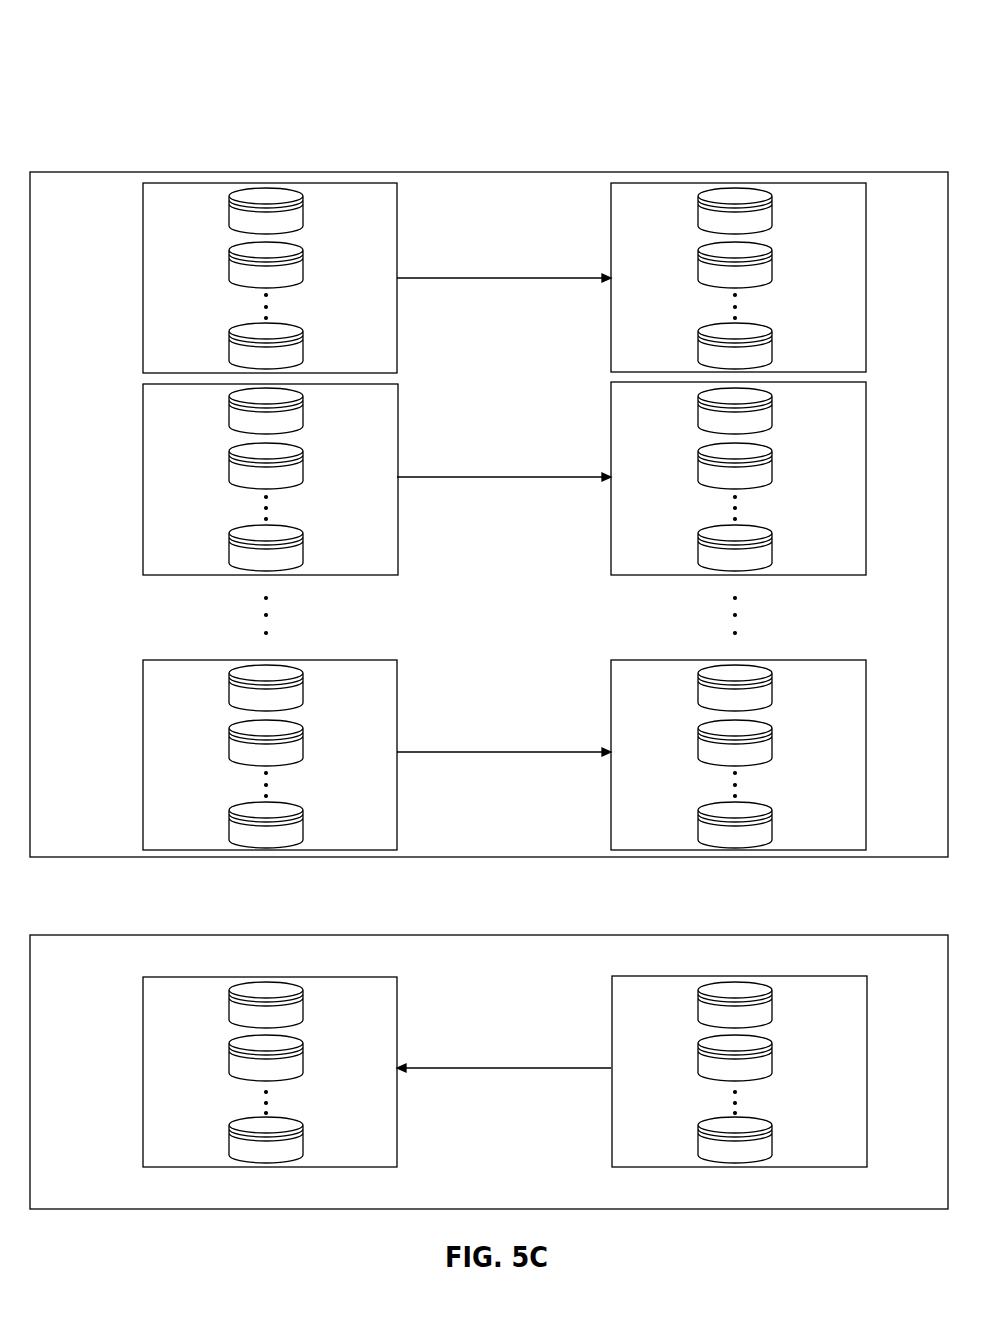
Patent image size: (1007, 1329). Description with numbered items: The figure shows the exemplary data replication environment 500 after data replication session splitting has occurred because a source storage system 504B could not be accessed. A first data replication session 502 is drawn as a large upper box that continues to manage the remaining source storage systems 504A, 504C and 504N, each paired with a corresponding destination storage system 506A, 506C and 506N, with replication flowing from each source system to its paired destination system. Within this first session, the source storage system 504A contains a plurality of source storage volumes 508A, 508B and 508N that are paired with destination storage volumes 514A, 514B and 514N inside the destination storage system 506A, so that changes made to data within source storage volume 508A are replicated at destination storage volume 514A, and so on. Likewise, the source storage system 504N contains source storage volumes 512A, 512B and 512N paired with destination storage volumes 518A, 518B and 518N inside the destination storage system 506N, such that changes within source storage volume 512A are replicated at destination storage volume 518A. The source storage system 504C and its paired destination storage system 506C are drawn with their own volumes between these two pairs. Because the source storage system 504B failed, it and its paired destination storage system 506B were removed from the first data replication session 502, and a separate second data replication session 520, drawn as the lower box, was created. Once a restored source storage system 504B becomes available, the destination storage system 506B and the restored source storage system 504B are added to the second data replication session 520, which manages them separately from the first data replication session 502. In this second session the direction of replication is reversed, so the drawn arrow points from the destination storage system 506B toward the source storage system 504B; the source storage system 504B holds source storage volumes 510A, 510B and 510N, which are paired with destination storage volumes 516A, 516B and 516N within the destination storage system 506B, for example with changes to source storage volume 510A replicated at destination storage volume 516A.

The data replication environment 500 is at (860, 76).
The first data replication session 502 is at (82, 172).
The second data replication session 520 is at (106, 934).
The source storage system 504A is at (397, 213).
The source storage system 504B is at (397, 1007).
The source storage system 504C is at (397, 415).
The source storage system 504N is at (397, 690).
The destination storage system 506A is at (866, 213).
The destination storage system 506B is at (867, 1010).
The destination storage system 506C is at (866, 417).
The destination storage system 506N is at (866, 691).
The source storage volume 508A is at (297, 217).
The source storage volume 508B is at (297, 271).
The source storage volume 508N is at (297, 352).
The source storage volume 510A is at (297, 1011).
The source storage volume 510B is at (297, 1064).
The source storage volume 510N is at (297, 1146).
The source storage volume 512A is at (297, 694).
The source storage volume 512B is at (297, 749).
The source storage volume 512N is at (297, 831).
The destination storage volume 514A is at (766, 217).
The destination storage volume 514B is at (766, 271).
The destination storage volume 514N is at (766, 352).
The destination storage volume 516A is at (766, 1011).
The destination storage volume 516B is at (766, 1064).
The destination storage volume 516N is at (766, 1146).
The destination storage volume 518A is at (766, 694).
The destination storage volume 518B is at (766, 749).
The destination storage volume 518N is at (766, 831).